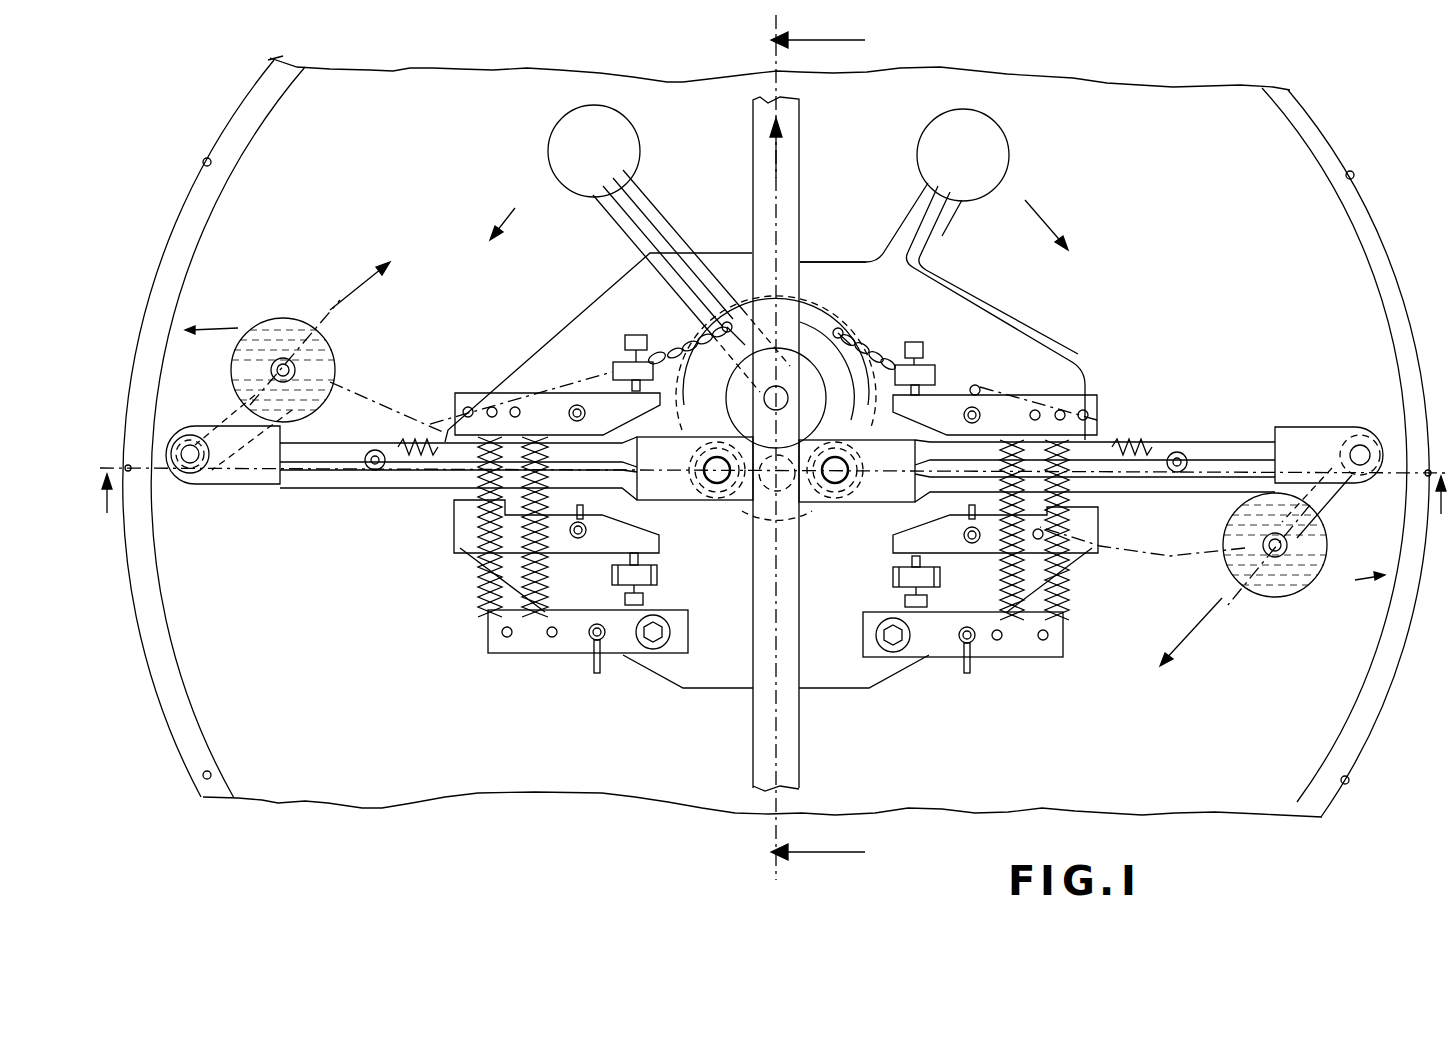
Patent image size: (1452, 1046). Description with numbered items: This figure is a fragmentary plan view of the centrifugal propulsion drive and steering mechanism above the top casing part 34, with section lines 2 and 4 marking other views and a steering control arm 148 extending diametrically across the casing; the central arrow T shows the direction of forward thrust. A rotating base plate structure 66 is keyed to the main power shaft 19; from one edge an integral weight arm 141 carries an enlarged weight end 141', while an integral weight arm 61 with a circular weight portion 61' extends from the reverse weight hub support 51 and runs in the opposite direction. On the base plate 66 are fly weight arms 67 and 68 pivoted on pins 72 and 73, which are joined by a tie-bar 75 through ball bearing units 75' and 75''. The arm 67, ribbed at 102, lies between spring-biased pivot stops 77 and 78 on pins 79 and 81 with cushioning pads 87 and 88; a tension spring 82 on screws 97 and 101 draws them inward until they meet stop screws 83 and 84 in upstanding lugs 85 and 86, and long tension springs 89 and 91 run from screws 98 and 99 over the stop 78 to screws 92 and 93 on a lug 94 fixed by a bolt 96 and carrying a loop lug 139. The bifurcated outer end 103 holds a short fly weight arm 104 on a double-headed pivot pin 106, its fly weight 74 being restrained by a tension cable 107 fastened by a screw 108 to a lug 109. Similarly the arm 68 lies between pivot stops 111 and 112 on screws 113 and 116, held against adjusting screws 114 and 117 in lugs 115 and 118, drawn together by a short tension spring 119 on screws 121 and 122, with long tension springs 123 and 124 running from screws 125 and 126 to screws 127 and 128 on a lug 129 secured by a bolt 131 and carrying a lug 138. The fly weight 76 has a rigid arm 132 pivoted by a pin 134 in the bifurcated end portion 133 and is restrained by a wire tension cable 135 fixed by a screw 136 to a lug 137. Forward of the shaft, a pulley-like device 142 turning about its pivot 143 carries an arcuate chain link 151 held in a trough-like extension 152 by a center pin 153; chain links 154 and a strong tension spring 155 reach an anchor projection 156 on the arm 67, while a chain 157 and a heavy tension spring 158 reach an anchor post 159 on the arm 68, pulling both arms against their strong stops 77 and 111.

The top casing part 34 is at (372, 741).
The section line 2- 2 is at (772, 478).
The section line 4- 4 is at (806, 447).
The steering control arm 148 is at (784, 725).
The central arrow T is at (782, 180).
The circular weight portion 61' is at (561, 151).
The integral weight arm 61 is at (675, 281).
The enlarged weight end 141' is at (929, 155).
The integral weight arm 141 is at (942, 311).
The chain links 154 is at (932, 300).
The rotating base plate structure 66 is at (975, 345).
The chain link 151 is at (808, 304).
The center pin 153 is at (765, 282).
The arcuate-shaped trough-like extension 152 is at (708, 322).
The pulley-like device 142 is at (840, 332).
The pivot pin support 143 is at (790, 398).
The main power shaft 19 is at (786, 518).
The reverse weight hub support 51 is at (742, 505).
The stop screw 83 is at (920, 345).
The upstanding lug 85 is at (895, 374).
The pivot pin 79 is at (975, 385).
The adjusting screw 114 is at (634, 335).
The lug 115 is at (613, 370).
The chain 157 is at (660, 362).
The spring-biased pivot stop 111 is at (514, 405).
The screw 125 is at (468, 405).
The screw 121 is at (492, 405).
The screw 126 is at (518, 405).
The screw 113 is at (599, 415).
The spring-biased pivot stop 77 is at (1097, 398).
The cushioning pad 87 is at (987, 417).
The fastening screw 98 is at (1035, 408).
The fastening screw 97 is at (1060, 408).
The fastening screw 99 is at (1088, 414).
The pivoted bolt 73 is at (704, 470).
The pivoted bolt 72 is at (850, 472).
The ball bearing unit 75'' is at (711, 491).
The ball bearing unit 75' is at (835, 497).
The tie-bar 75 is at (885, 508).
The lug 137 is at (560, 493).
The fly weight arm 68 is at (312, 478).
The fly weight arm 67 is at (1150, 480).
The tension spring 82 is at (1100, 480).
The longitudinal rib 102 is at (1218, 440).
The short tension spring 119 is at (455, 470).
The anchor post 159 is at (373, 472).
The anchor projection 156 is at (1178, 450).
The heavy tension spring 158 is at (438, 437).
The strong tension spring 155 is at (1148, 445).
The bifurcated end portion 133 is at (222, 487).
The double-headed pivot pin 134 is at (190, 442).
The rigid arm 132 is at (215, 395).
The fly weight 76 is at (285, 320).
The fastening screw 136 is at (272, 358).
The wire tension cable 135 is at (360, 395).
The bifurcated outer end 103 is at (1302, 427).
The double-headed pivot pin 106 is at (1358, 443).
The short fly weight arm 104 is at (1340, 505).
The fly weight 74 is at (1295, 597).
The screw 108 is at (1262, 540).
The tension cable 107 is at (1180, 560).
The spring-biased pivot stop 112 is at (457, 522).
The pivot screw 116 is at (578, 540).
The lug 118 is at (656, 575).
The adjusting screw 117 is at (644, 598).
The spring-biased pivot stop 78 is at (1098, 530).
The pivot pin 81 is at (972, 545).
The lug 109 is at (966, 506).
The upstanding lug 86 is at (893, 578).
The stop screw 84 is at (905, 600).
The screw 122 is at (480, 560).
The long tension spring 123 is at (490, 590).
The long tension spring 124 is at (548, 590).
The long tension spring 89 is at (1002, 606).
The long tension spring 91 is at (1062, 598).
The fastening screw 101 is at (1060, 570).
The cushioning pad 88 is at (1098, 508).
The bolt 131 is at (672, 634).
The screw 127 is at (505, 640).
The screw 128 is at (552, 640).
The laterally-extending lug 129 is at (588, 655).
The lug 138 is at (602, 670).
The lug 94 is at (940, 656).
The fastening bolt 96 is at (880, 638).
The loop lug 139 is at (965, 675).
The screw 92 is at (998, 642).
The screw 93 is at (1043, 642).